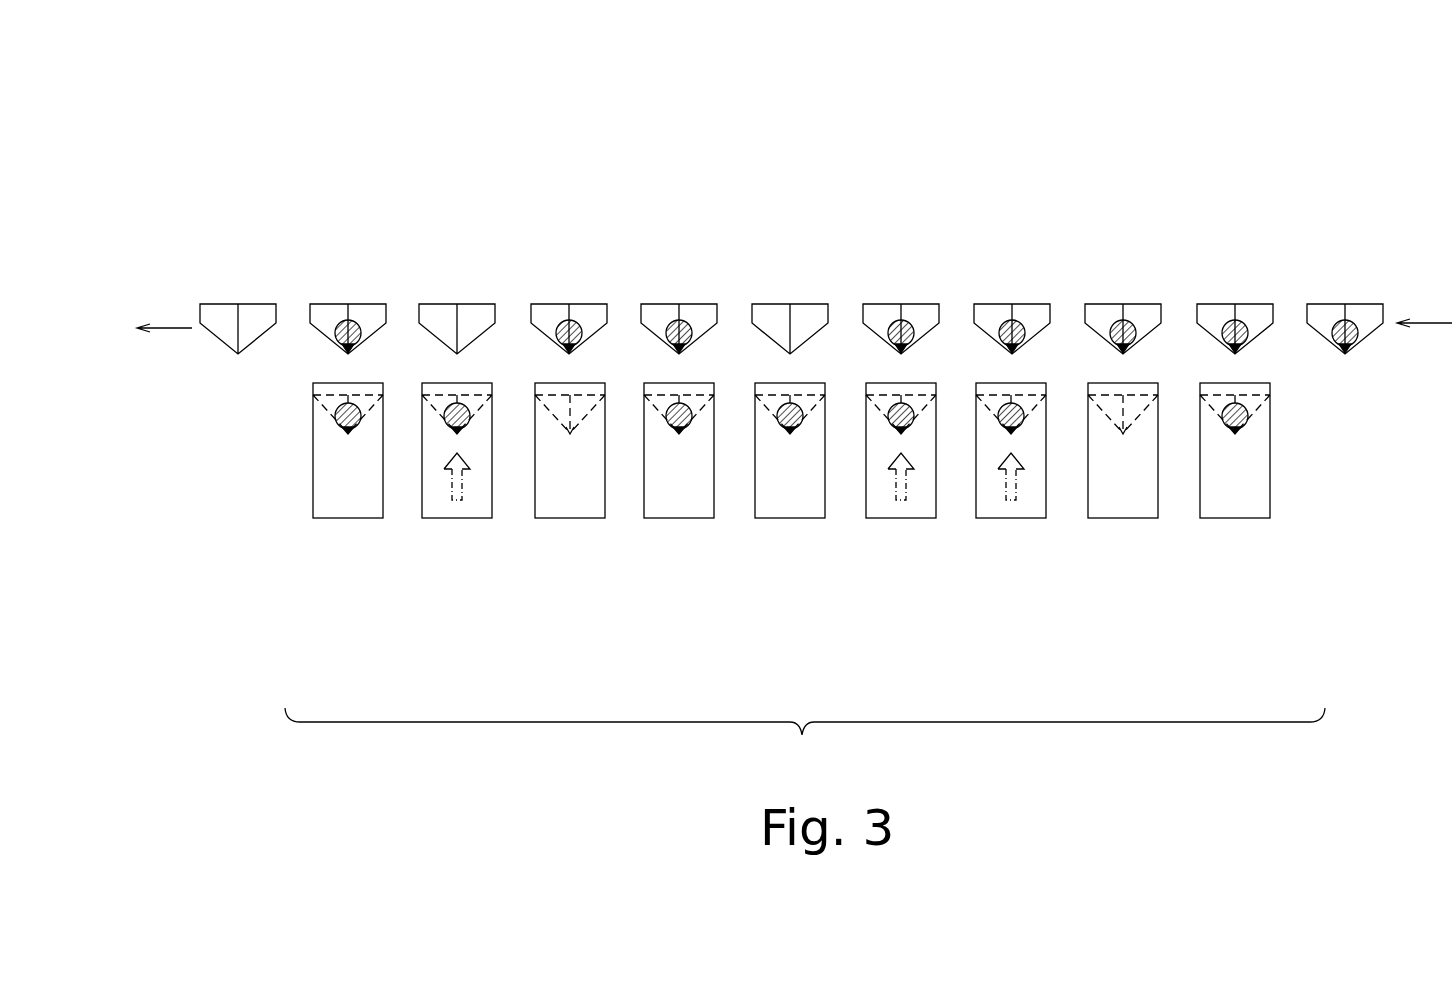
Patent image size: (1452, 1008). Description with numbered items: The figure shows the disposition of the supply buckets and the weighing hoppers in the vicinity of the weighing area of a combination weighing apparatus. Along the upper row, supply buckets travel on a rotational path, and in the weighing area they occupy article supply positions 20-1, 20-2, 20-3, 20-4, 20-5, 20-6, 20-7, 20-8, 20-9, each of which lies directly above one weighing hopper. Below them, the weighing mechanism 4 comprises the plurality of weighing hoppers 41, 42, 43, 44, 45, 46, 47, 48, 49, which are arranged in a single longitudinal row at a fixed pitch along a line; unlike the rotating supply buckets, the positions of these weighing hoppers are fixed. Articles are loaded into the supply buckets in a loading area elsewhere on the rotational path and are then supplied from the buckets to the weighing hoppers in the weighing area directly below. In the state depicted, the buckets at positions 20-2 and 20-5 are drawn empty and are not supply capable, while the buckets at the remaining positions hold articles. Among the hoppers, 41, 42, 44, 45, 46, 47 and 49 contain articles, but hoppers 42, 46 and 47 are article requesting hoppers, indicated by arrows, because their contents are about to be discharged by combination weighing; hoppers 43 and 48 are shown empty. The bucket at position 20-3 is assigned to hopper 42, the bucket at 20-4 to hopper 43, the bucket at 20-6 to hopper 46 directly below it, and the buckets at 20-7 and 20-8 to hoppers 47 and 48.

The article supply position 20-1 is at (347, 283).
The article supply position 20-2 is at (453, 283).
The article supply position 20-3 is at (568, 283).
The article supply position 20-4 is at (678, 283).
The article supply position 20-5 is at (789, 280).
The article supply position 20-6 is at (898, 273).
The article supply position 20-7 is at (1007, 267).
The article supply position 20-8 is at (1123, 283).
The article supply position 20-9 is at (1228, 268).
The weighing hopper 41 is at (348, 530).
The weighing hopper 42 is at (452, 530).
The weighing hopper 43 is at (568, 530).
The weighing hopper 44 is at (678, 530).
The weighing hopper 45 is at (790, 535).
The weighing hopper 46 is at (900, 540).
The weighing hopper 47 is at (1008, 535).
The weighing hopper 48 is at (1123, 530).
The weighing hopper 49 is at (1230, 530).
The weighing mechanism 4 is at (805, 741).